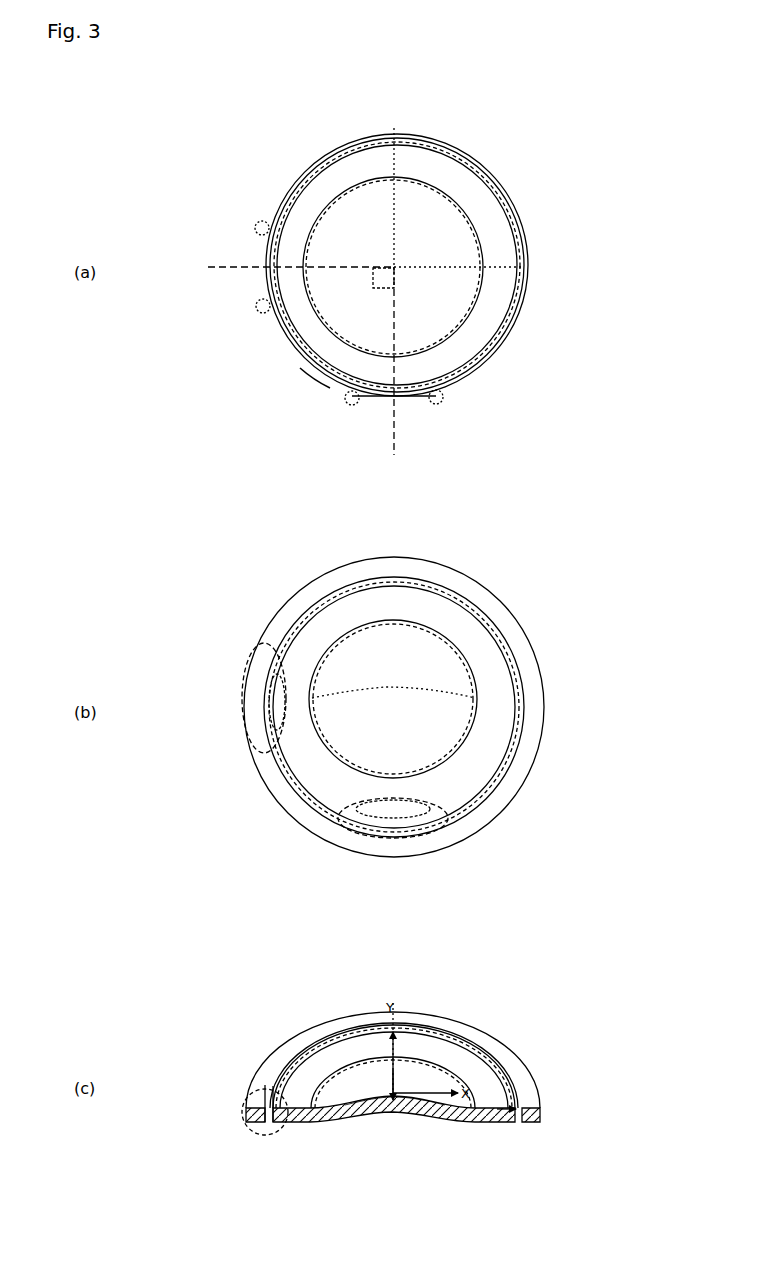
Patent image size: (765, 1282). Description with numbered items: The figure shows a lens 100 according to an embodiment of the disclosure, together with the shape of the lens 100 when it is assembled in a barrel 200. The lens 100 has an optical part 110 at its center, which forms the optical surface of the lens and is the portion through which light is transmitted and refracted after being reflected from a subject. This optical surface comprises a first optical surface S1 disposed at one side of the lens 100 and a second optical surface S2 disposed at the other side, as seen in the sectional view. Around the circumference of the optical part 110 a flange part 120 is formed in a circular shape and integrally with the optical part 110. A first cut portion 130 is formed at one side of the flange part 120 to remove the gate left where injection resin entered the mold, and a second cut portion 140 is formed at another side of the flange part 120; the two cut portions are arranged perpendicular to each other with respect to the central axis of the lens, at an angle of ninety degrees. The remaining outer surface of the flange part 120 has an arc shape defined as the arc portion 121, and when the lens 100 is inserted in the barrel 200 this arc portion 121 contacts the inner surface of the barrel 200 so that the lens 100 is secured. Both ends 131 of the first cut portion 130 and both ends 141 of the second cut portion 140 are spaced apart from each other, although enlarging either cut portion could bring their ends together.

The lens 100 is at (221, 160).
The optical part 110 is at (428, 233).
The flange part 120 is at (487, 313).
The arc portion 121 is at (299, 366).
The first cut portion 130 is at (413, 400).
The ends of the first cut portion 131 is at (350, 405).
The second cut portion 140 is at (268, 276).
The ends of the second cut portion 141 is at (262, 313).
The barrel 200 is at (525, 762).
The first optical surface S1 is at (366, 1120).
The second optical surface S2 is at (403, 1113).